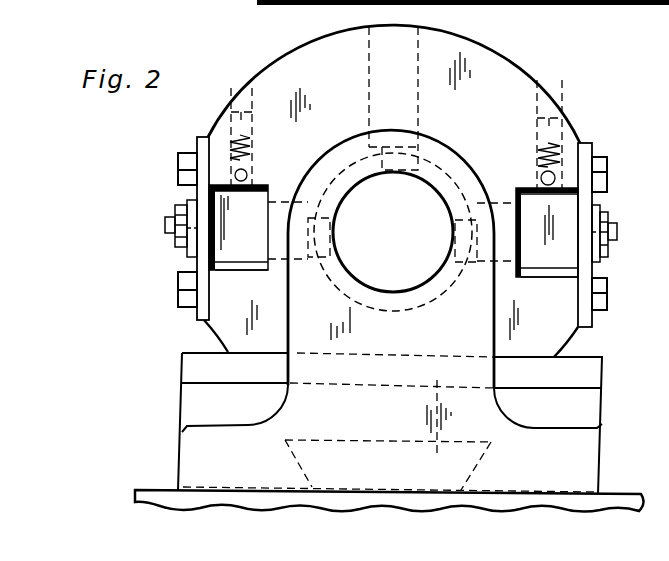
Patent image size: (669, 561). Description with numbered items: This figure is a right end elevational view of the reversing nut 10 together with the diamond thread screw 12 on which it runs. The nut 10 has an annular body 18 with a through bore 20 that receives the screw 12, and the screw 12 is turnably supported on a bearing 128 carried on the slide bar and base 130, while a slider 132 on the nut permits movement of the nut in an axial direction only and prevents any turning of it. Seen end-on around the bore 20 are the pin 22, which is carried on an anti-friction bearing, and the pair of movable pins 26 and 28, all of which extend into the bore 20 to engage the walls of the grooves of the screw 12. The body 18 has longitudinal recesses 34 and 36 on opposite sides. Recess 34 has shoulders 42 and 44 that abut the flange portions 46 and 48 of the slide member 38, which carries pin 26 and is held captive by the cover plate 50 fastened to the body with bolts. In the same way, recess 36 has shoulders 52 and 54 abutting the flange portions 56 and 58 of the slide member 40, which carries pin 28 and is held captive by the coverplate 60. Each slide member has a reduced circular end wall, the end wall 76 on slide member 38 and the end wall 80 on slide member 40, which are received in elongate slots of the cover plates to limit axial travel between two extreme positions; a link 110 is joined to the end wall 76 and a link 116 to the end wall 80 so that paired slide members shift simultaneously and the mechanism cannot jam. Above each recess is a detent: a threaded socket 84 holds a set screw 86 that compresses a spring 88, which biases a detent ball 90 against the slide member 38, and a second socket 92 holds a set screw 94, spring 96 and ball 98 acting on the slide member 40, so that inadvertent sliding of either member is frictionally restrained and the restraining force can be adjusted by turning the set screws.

The reversing nut 10 is at (424, 186).
The diamond thread screw 12 is at (385, 317).
The annular body 18 is at (484, 75).
The through bore 20 is at (366, 305).
The pin 22 is at (410, 159).
The movable pin 26 is at (328, 282).
The movable pin 28 is at (453, 280).
The longitudinal recess 34 is at (271, 219).
The longitudinal recess 36 is at (533, 231).
The slide member 38 is at (245, 238).
The slide member 40 is at (555, 250).
The shoulder 42 is at (270, 193).
The shoulder 44 is at (273, 262).
The flange portion 46 is at (267, 197).
The flange portion 48 is at (266, 266).
The cover plate 50 is at (203, 273).
The shoulder 52 is at (516, 193).
The shoulder 54 is at (514, 272).
The flange portion 56 is at (522, 197).
The flange portion 58 is at (521, 268).
The coverplate 60 is at (607, 293).
The circular end wall 76 is at (192, 253).
The circular end wall 80 is at (606, 253).
The threaded socket 84 is at (243, 88).
The set screw 86 is at (253, 110).
The spring 88 is at (238, 173).
The detent ball 90 is at (197, 143).
The socket 92 is at (551, 100).
The set screw 94 is at (537, 123).
The spring 96 is at (568, 143).
The ball 98 is at (607, 158).
The link 110 is at (182, 203).
The link 116 is at (611, 210).
The bearing 128 is at (352, 133).
The slide bar and base 130 is at (627, 7).
The slider 132 is at (195, 414).